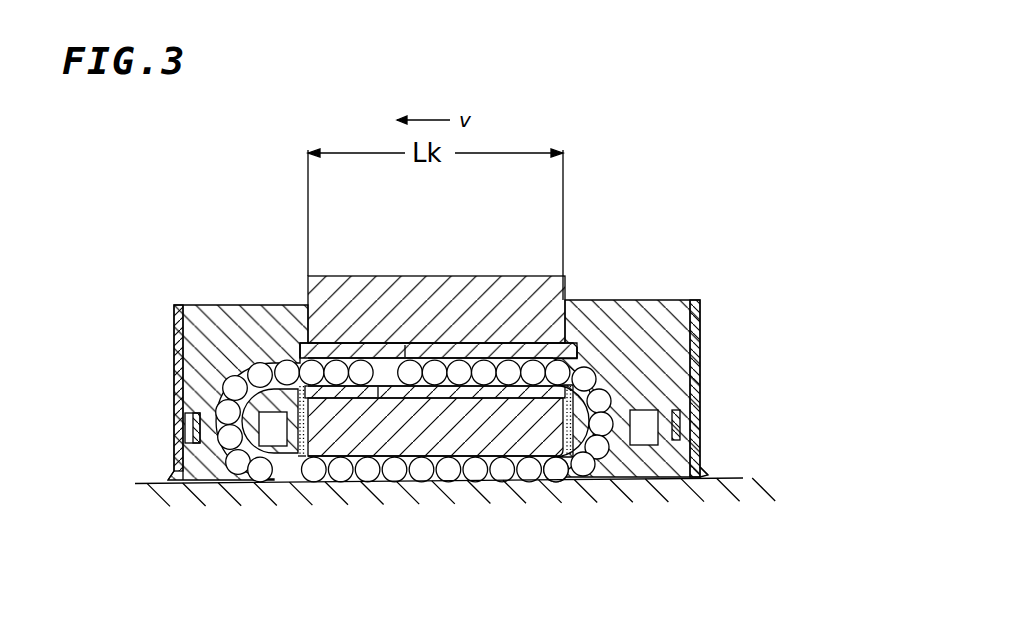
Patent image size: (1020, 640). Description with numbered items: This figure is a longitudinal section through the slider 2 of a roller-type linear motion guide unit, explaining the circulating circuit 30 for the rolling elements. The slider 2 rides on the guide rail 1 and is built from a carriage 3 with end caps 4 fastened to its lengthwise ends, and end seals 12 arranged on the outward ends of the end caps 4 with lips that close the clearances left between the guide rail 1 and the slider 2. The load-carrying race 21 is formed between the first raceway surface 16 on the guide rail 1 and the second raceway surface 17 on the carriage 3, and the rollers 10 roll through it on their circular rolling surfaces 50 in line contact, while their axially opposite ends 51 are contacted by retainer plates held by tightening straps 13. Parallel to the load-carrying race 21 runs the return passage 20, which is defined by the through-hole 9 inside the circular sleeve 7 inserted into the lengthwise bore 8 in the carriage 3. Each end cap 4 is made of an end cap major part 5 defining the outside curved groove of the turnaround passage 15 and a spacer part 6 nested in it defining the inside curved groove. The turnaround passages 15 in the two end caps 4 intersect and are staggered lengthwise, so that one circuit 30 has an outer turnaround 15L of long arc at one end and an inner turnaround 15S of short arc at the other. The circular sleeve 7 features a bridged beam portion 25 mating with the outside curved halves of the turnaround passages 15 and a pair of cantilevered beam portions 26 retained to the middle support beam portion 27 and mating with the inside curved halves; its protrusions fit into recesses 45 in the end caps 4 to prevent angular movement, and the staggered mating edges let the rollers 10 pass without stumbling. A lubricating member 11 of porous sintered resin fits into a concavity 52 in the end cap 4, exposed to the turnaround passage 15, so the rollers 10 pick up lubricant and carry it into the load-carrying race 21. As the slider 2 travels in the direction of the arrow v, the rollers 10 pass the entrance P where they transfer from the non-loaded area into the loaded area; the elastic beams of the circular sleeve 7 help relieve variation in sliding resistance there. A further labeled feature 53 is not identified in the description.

The guide rail 1 is at (388, 458).
The slider 2 is at (570, 279).
The carriage 3 is at (454, 395).
The end cap 4 is at (224, 330).
The end cap major part 5 is at (638, 340).
The spacer part 6 is at (592, 400).
The circular sleeve 7 is at (345, 385).
The lengthwise bore 8 is at (385, 372).
The through-hole 9 is at (455, 343).
The roller 10 is at (396, 476).
The lubricating member 11 is at (300, 386).
The end seal 12 is at (176, 345).
The tightening strap 13 is at (186, 428).
The turnaround passage 15 is at (586, 530).
The outer turnaround 15L is at (270, 410).
The inner turnaround 15S is at (284, 464).
The first raceway surface 16 is at (343, 474).
The second raceway surface 17 is at (483, 485).
The return passage 20 is at (553, 476).
The load-carrying race 21 is at (527, 476).
The bridged beam portion 25 is at (432, 345).
The cantilevered beam portion 26 is at (478, 345).
The middle support beam portion 27 is at (421, 474).
The circulating circuit 30 is at (605, 561).
The recess 45 is at (298, 344).
The circular rolling surface 50 is at (510, 345).
The axially opposite ends 51 is at (405, 345).
The concavity 52 is at (316, 474).
The upper plate 53 is at (335, 345).
The entrance P is at (305, 460).